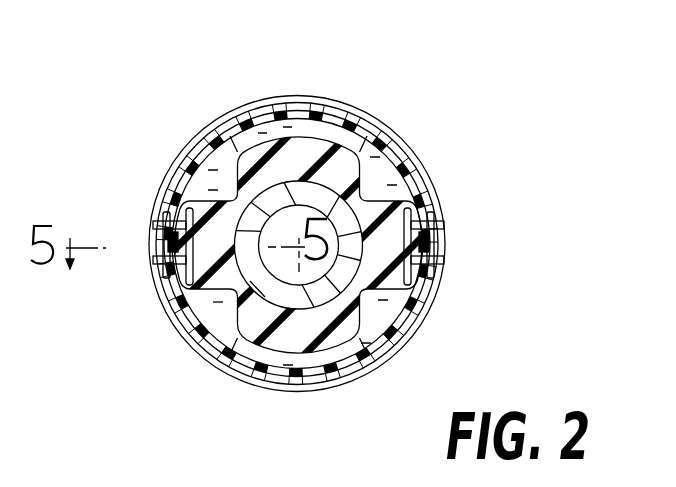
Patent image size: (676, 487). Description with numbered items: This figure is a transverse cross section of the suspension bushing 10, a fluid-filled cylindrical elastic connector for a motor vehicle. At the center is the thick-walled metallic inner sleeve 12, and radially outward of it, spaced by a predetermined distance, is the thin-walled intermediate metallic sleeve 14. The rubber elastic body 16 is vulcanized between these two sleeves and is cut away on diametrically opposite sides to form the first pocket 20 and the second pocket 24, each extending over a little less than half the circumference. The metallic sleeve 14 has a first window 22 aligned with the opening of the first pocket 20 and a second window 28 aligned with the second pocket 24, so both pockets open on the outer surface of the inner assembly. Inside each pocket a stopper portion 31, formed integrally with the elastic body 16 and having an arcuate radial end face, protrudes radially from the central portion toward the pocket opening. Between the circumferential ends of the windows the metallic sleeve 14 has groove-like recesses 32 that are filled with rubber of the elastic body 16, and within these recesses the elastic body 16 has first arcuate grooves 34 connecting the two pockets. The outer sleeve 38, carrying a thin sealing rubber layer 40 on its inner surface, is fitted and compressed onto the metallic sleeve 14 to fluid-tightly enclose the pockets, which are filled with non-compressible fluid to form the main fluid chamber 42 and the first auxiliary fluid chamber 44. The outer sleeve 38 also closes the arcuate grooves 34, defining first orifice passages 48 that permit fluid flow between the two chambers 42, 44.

The suspension bushing 10 is at (386, 64).
The inner sleeve 12 is at (322, 290).
The metallic sleeve 14 is at (425, 262).
The elastic body 16 is at (202, 262).
The first pocket 20 is at (375, 197).
The first window 22 is at (193, 207).
The second pocket 24 is at (204, 303).
The second window 28 is at (411, 299).
The stopper portion 31 is at (304, 147).
The groove-like recesses 32 is at (419, 216).
The first arcuate grooves 34 is at (425, 227).
The outer sleeve 38 is at (331, 385).
The sealing rubber layer 40 is at (214, 349).
The main fluid chamber 42 is at (360, 143).
The first auxiliary fluid chamber 44 is at (270, 360).
The first orifice passages 48 is at (427, 268).